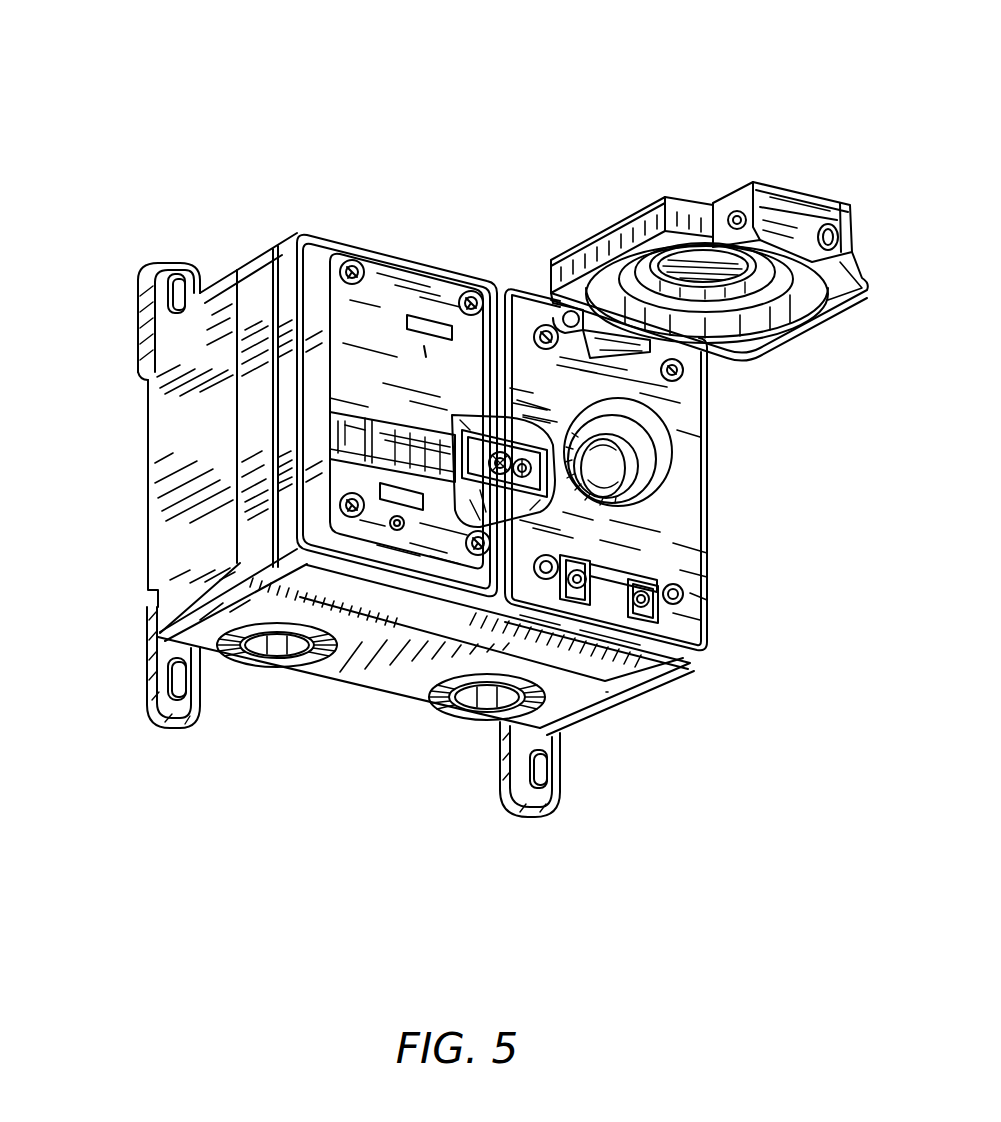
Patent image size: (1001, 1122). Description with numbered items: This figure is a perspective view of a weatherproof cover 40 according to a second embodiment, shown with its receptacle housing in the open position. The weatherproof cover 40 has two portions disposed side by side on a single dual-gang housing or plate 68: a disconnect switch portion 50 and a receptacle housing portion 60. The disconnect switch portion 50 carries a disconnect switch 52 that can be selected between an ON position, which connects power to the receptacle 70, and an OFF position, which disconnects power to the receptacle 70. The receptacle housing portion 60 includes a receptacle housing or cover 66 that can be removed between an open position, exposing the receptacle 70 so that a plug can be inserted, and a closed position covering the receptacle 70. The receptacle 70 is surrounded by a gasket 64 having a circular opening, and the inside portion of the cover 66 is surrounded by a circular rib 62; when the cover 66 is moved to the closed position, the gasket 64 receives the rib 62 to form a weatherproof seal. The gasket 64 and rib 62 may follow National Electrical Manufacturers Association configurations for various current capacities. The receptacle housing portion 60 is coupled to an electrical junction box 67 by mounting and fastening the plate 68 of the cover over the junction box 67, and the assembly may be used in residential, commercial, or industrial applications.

The weatherproof cover 40 is at (495, 39).
The disconnect switch portion 50 is at (405, 253).
The disconnect switch 52 is at (337, 437).
The receptacle housing portion 60 is at (530, 277).
The circular rib 62 is at (640, 268).
The gasket 64 is at (680, 527).
The receptacle housing or cover 66 is at (866, 245).
The electrical junction box 67 is at (147, 567).
The dual-gang housing or plate 68 is at (683, 670).
The receptacle 70 is at (663, 457).